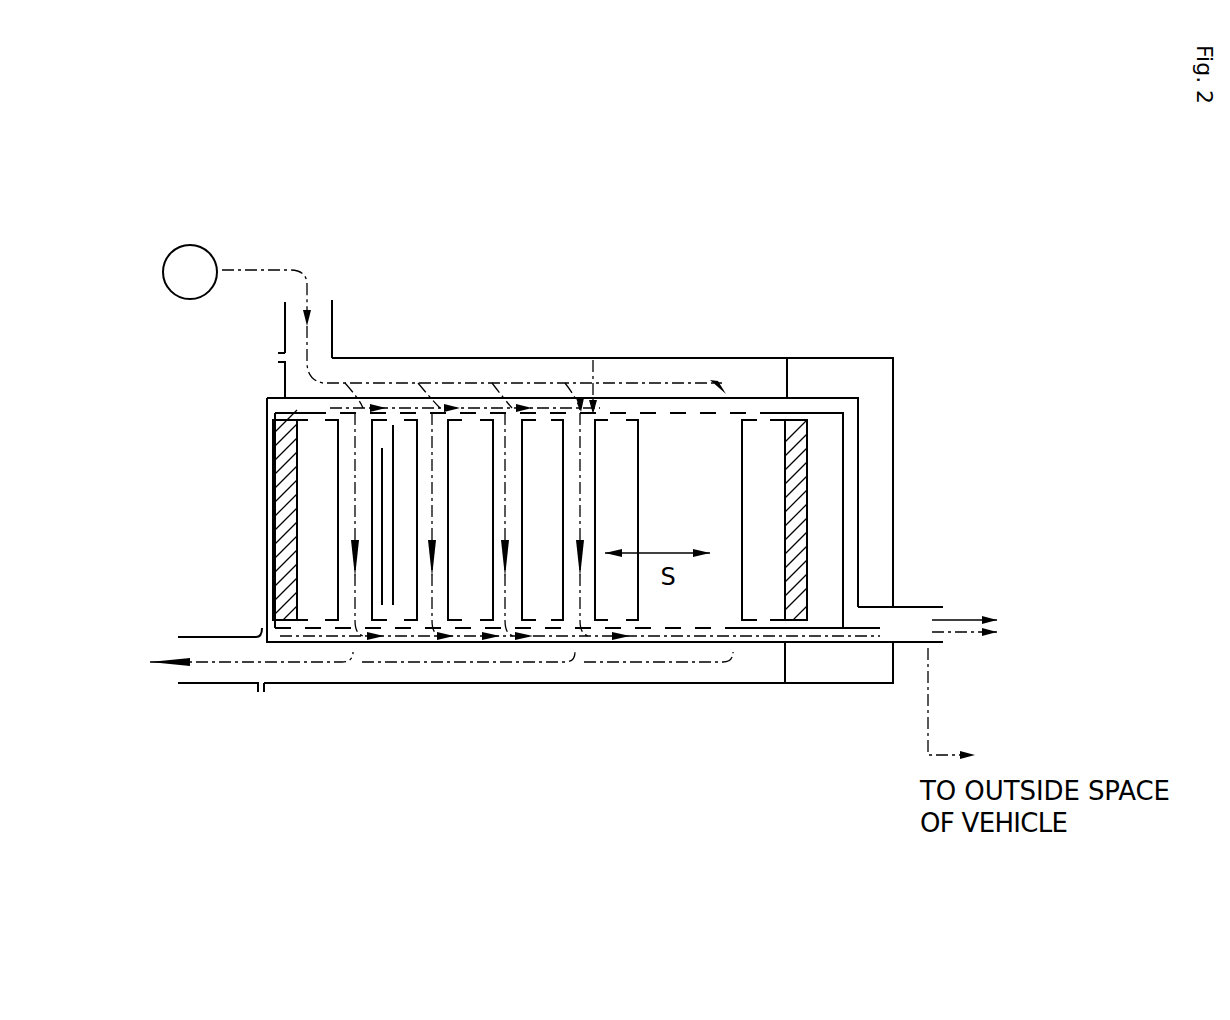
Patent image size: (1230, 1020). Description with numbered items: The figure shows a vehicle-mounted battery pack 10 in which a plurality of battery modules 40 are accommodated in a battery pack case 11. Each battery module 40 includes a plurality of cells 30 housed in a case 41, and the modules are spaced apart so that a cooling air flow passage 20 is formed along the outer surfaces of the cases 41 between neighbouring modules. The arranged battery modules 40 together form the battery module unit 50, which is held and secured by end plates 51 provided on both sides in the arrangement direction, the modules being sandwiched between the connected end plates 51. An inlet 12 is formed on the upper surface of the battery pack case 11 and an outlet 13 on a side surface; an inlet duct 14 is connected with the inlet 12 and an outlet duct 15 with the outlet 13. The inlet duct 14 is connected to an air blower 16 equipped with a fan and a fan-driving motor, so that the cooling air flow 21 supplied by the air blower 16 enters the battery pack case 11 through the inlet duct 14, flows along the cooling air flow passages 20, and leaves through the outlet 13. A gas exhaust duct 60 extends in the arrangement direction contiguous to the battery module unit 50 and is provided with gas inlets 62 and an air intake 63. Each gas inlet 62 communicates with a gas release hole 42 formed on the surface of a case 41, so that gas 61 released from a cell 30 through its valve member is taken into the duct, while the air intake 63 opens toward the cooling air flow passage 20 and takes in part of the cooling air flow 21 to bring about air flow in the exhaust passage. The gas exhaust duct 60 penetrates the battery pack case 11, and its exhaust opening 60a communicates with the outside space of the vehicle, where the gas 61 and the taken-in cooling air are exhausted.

The battery pack 10 is at (863, 277).
The battery pack case 11 is at (474, 358).
The inlet 12 is at (330, 357).
The outlet 13 is at (262, 672).
The inlet duct 14 is at (332, 306).
The outlet duct 15 is at (213, 683).
The air blower 16 is at (190, 262).
The cooling air flow passage 20 is at (673, 378).
The cooling air flow 21 is at (290, 266).
The cell 30 is at (382, 456).
The battery module 40 is at (640, 468).
The case 41 is at (638, 606).
The gas release hole 42 is at (473, 424).
The battery module unit 50 is at (786, 446).
The end plate 51 is at (275, 491).
The gas exhaust duct 60 is at (773, 400).
The exhaust opening 60a is at (943, 607).
The gas 61 is at (968, 618).
The gas inlet 62 is at (467, 422).
The air intake 63 is at (510, 402).